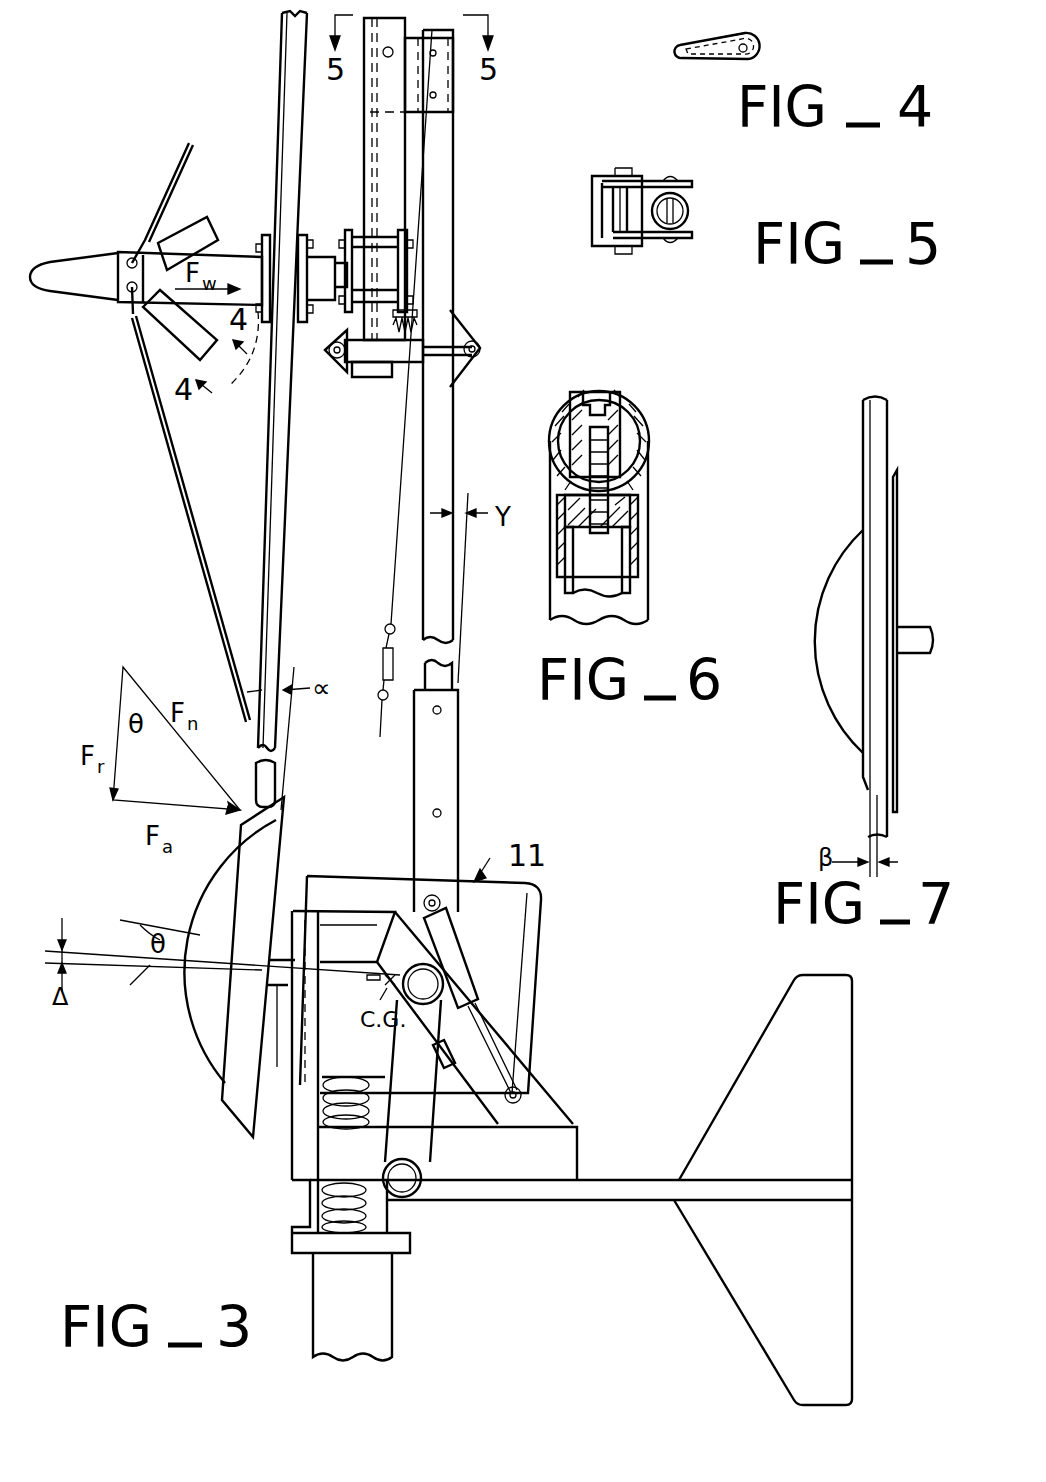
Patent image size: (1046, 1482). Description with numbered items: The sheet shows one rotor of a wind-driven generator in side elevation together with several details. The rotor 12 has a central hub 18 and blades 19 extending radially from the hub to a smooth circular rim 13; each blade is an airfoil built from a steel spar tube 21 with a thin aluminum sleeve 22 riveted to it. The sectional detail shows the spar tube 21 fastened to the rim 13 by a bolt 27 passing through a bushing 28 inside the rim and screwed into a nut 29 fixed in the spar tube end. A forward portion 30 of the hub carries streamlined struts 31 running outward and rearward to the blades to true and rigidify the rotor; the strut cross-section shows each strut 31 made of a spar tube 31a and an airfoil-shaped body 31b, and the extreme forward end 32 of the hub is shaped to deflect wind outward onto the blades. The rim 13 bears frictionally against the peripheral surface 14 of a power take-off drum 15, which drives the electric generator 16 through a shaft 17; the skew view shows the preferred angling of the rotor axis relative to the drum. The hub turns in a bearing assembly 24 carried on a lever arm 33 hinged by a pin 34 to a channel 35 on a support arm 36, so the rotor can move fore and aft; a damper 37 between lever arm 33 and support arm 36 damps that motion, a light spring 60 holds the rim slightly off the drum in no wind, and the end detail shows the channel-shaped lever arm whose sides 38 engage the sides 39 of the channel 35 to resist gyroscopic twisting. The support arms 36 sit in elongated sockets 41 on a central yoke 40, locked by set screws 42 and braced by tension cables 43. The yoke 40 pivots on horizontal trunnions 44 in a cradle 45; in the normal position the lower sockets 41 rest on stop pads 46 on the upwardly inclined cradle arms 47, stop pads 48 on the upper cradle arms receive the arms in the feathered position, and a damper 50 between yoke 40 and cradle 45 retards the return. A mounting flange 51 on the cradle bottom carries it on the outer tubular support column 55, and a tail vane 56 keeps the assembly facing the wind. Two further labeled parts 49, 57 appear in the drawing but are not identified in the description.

In FIG. 3, the rotor 12 is at (288, 543).
In FIG. 3, the rotor rim 13 is at (268, 612).
In FIG. 6, the rotor rim 13 is at (630, 420).
In FIG. 7, the rotor rim 13 is at (868, 757).
In FIG. 3, the peripheral surface 14 is at (270, 857).
In FIG. 7, the peripheral surface 14 is at (898, 495).
In FIG. 3, the central power take-off drum 15 is at (193, 1040).
In FIG. 7, the central power take-off drum 15 is at (895, 718).
In FIG. 3, the electric generator 16 is at (543, 912).
In FIG. 3, the shaft 17 is at (279, 1016).
In FIG. 7, the shaft 17 is at (913, 630).
In FIG. 3, the rotor hub 18 is at (243, 252).
In FIG. 6, the blades 19 is at (638, 541).
In FIG. 6, the spar tube 21 is at (628, 588).
In FIG. 6, the sleeve 22 is at (634, 565).
In FIG. 3, the bearing assembly 24 is at (313, 253).
In FIG. 6, the bolt 27 is at (600, 457).
In FIG. 6, the bushing 28 is at (628, 432).
In FIG. 6, the nut 29 is at (632, 505).
In FIG. 3, the forward portion of hub 30 is at (222, 378).
In FIG. 3, the strut 31 is at (183, 228).
In FIG. 4, the strut 31 is at (695, 34).
In FIG. 4, the spar tube 31a is at (760, 54).
In FIG. 4, the airfoil-shaped body 31b is at (755, 30).
In FIG. 3, the forward end of hub 32 is at (74, 292).
In FIG. 3, the lever arm 33 is at (375, 160).
In FIG. 5, the lever arm 33 is at (592, 208).
In FIG. 3, the hinge pin 34 is at (383, 54).
In FIG. 5, the hinge pin 34 is at (628, 206).
In FIG. 3, the channel 35 is at (453, 80).
In FIG. 5, the channel 35 is at (688, 240).
In FIG. 3, the support arm 36 is at (437, 222).
In FIG. 5, the support arm 36 is at (688, 210).
In FIG. 3, the damper 37 is at (380, 365).
In FIG. 5, the sides of lever arm 38 is at (606, 175).
In FIG. 5, the sides of channel 39 is at (645, 181).
In FIG. 3, the central yoke 40 is at (414, 868).
In FIG. 3, the socket 41 is at (420, 783).
In FIG. 3, the set screw 42 is at (441, 713).
In FIG. 3, the tension cable 43 is at (402, 492).
In FIG. 3, the trunnion 44 is at (432, 995).
In FIG. 3, the cradle 45 is at (575, 1125).
In FIG. 3, the stop member pad 46 is at (437, 1053).
In FIG. 3, the cradle arm 47 is at (540, 1097).
In FIG. 3, the stop member pad 48 is at (342, 977).
In FIG. 3, the housing block 49 is at (352, 927).
In FIG. 3, the damper 50 is at (460, 958).
In FIG. 3, the mounting flange 51 is at (405, 1245).
In FIG. 3, the support column 55 is at (395, 1308).
In FIG. 3, the tail vane 56 is at (756, 1050).
In FIG. 3, the compression spring 57 is at (325, 1208).
In FIG. 3, the spring 60 is at (417, 326).